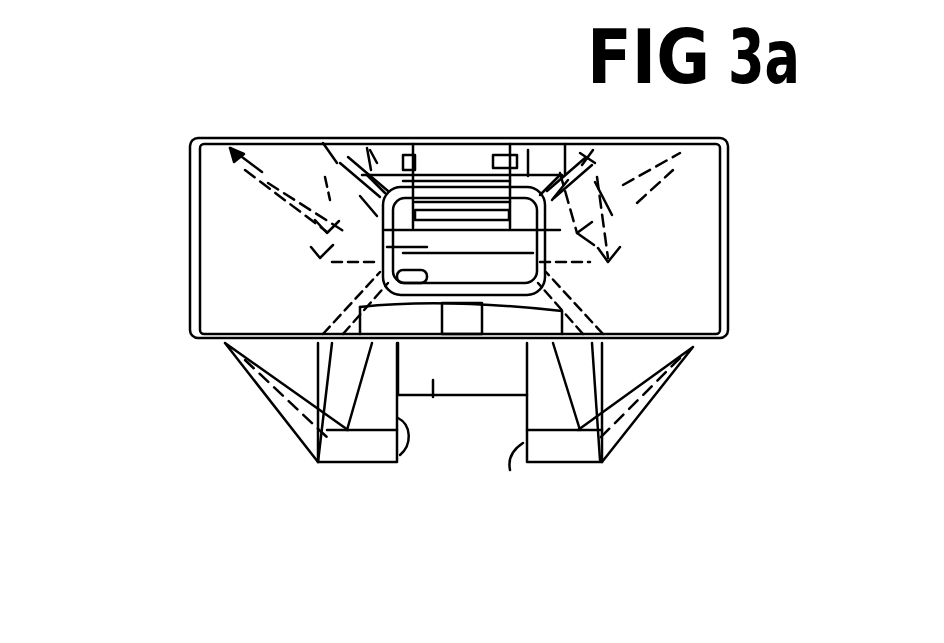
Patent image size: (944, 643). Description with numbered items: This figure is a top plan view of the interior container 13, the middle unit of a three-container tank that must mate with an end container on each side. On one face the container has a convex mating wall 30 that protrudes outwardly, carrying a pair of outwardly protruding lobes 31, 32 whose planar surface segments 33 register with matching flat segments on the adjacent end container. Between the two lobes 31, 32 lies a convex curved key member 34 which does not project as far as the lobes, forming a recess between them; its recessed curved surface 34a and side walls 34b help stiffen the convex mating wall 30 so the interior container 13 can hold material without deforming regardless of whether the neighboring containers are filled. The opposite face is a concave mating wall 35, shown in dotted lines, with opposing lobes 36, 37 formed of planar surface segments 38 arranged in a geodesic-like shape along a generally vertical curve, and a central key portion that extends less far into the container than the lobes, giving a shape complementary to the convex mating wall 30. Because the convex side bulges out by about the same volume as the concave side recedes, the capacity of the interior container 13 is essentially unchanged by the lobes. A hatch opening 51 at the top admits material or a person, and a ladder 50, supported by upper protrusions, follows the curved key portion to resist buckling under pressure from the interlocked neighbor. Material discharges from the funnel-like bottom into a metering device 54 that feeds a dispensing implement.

The interior container 13 is at (167, 102).
The convex mating wall 30 is at (424, 493).
The outwardly protruding lobe 31 is at (283, 420).
The outwardly protruding lobe 32 is at (653, 402).
The planar surface segments 33 is at (373, 420).
The convex curved key member 34 is at (478, 372).
The recessed curved surface 34a is at (433, 397).
The side walls 34b is at (400, 455).
The concave mating wall 35 is at (455, 131).
The opposing lobe 36 is at (300, 175).
The opposing lobe 37 is at (623, 185).
The planar surface segments 38 is at (373, 229).
The ladder 50 is at (437, 213).
The hatch opening 51 is at (385, 262).
The metering device 54 is at (427, 247).